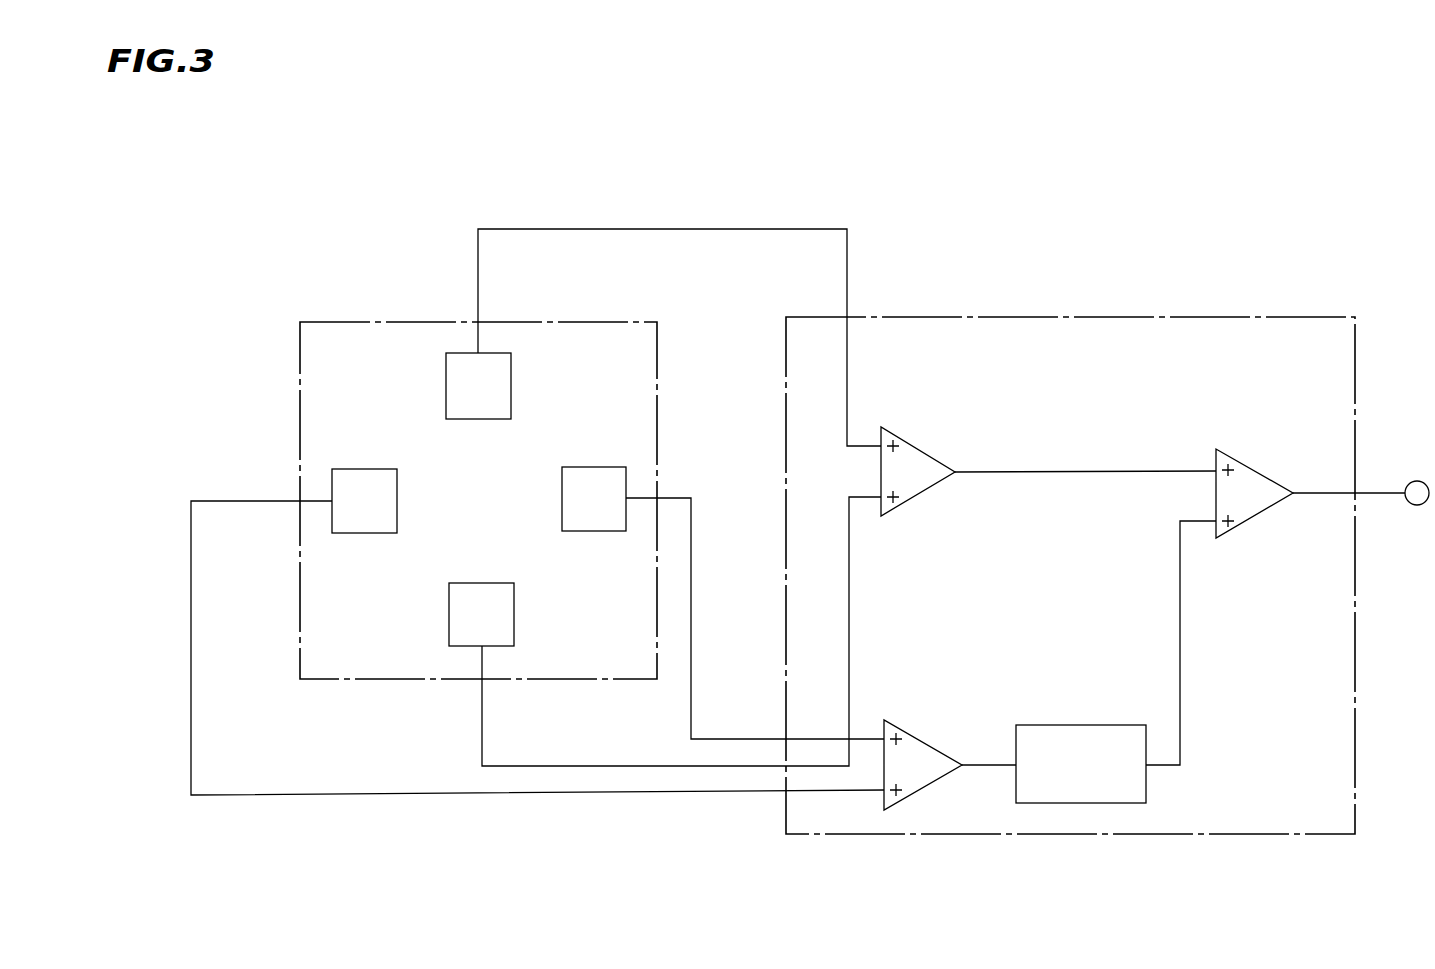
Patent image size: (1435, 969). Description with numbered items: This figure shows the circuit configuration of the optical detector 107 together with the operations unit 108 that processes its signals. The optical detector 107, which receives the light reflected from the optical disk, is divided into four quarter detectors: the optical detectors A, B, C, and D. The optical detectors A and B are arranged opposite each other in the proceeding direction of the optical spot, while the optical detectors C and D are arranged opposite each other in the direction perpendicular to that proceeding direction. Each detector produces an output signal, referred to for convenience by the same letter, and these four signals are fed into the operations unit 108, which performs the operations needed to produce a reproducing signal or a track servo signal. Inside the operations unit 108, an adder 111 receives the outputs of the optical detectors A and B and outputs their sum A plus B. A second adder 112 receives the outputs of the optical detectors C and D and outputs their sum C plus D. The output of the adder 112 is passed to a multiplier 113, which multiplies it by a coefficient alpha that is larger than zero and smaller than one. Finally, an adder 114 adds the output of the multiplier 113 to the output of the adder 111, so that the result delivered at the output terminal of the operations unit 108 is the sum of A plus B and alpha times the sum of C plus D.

The optical detector 107 is at (323, 322).
The operations unit 108 is at (1122, 317).
The adder 111 is at (924, 452).
The adder 112 is at (928, 742).
The multiplier 113 is at (1089, 725).
The adder 114 is at (1258, 470).
The optical detector A is at (446, 362).
The optical detector B is at (514, 630).
The optical detector C is at (345, 533).
The optical detector D is at (612, 467).